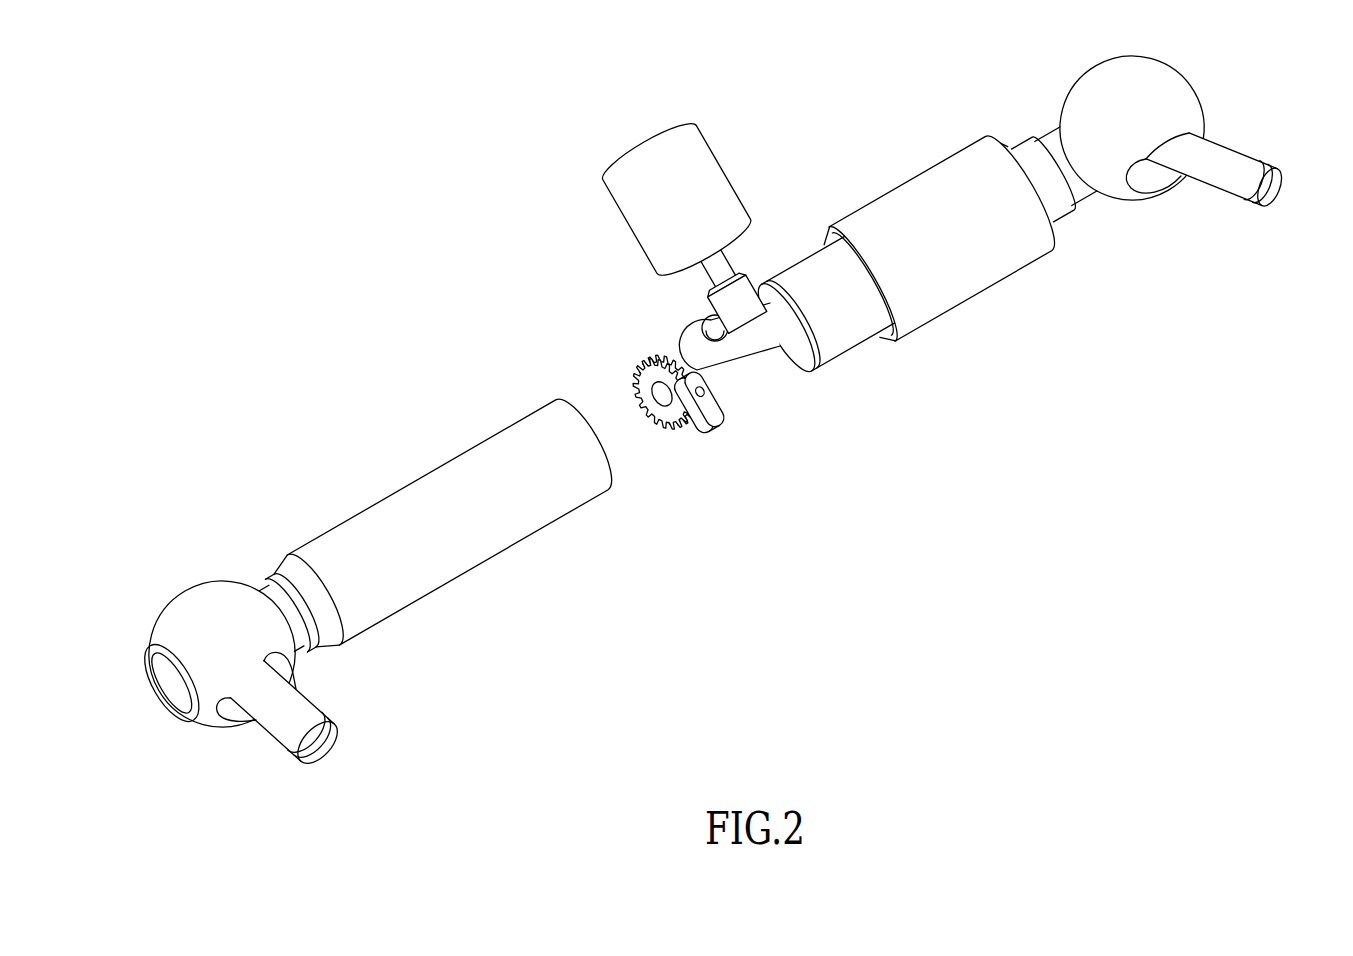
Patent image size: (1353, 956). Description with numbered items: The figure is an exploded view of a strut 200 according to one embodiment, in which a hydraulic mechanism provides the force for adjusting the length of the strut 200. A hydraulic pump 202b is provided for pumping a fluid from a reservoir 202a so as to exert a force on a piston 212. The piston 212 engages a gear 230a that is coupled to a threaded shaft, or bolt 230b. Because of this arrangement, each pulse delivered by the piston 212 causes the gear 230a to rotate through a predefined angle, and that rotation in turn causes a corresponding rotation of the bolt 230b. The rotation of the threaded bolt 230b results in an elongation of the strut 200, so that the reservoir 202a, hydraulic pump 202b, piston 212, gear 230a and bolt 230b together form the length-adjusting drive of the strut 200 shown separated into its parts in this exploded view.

The strut 200 is at (318, 188).
The reservoir 202a is at (713, 144).
The hydraulic pump 202b is at (746, 280).
The piston 212 is at (692, 314).
The gear 230a is at (673, 436).
The bolt 230b is at (740, 354).